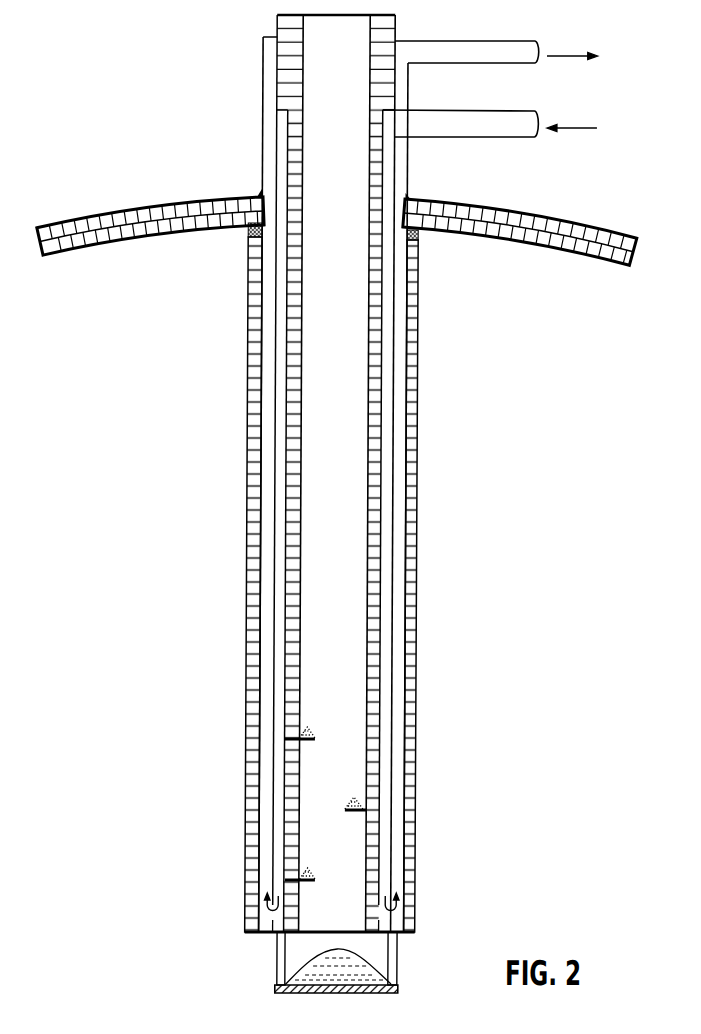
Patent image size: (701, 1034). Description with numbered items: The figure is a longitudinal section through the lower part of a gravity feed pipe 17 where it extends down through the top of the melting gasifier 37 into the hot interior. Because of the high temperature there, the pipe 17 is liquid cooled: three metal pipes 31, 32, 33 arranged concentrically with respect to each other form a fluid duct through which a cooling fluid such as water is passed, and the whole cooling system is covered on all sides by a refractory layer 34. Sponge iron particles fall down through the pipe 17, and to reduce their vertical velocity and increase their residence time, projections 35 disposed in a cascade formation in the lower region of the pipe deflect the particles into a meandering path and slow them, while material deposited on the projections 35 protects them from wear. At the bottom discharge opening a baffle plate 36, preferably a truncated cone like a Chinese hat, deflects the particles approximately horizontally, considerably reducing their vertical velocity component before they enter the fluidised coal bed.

The gravity feed pipe 17 is at (419, 891).
The metal pipe 31 is at (381, 762).
The metal pipe 32 is at (392, 793).
The metal pipe 33 is at (407, 818).
The refractory layer 34 is at (376, 627).
The projections 35 is at (359, 806).
The baffle plate 36 is at (387, 986).
The top of the melting gasifier 37 is at (575, 229).